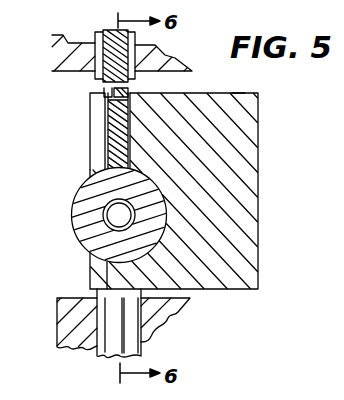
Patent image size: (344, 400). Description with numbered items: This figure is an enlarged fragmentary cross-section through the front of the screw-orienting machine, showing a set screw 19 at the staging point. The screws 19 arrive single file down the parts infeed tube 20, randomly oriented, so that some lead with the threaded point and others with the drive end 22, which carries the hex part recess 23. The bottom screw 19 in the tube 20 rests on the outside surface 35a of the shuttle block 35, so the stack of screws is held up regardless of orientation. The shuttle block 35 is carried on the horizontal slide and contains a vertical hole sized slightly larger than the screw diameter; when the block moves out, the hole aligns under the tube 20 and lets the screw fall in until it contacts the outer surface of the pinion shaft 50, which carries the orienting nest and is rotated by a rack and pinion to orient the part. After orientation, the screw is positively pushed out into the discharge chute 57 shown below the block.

The set screw 19 is at (112, 130).
The parts infeed tube 20 is at (150, 44).
The drive end 22 is at (105, 108).
The part recess 23 is at (112, 50).
The shuttle block 35 is at (244, 165).
The outside surface of shuttle block 35a is at (235, 93).
The pinion shaft 50 is at (88, 198).
The discharge chute 57 is at (103, 357).